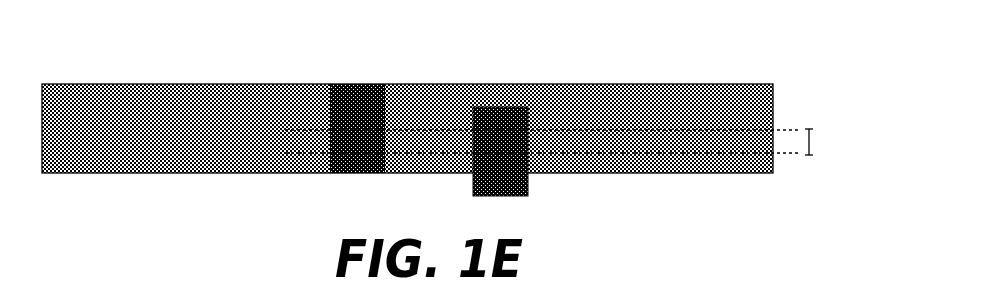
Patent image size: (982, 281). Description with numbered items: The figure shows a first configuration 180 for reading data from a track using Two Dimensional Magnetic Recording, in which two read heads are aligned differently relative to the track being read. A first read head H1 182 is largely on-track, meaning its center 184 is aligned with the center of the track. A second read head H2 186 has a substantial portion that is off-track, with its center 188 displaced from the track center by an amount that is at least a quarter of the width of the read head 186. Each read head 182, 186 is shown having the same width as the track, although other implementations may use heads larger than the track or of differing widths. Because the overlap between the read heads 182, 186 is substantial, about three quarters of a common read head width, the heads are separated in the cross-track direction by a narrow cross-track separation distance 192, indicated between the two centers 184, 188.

The first configuration 180 is at (788, 63).
The read head H1 182 is at (357, 84).
The center of read head H1 184 is at (777, 129).
The read head H2 186 is at (497, 107).
The center of read head H2 188 is at (777, 153).
The narrow cross-track separation distance 192 is at (809, 142).